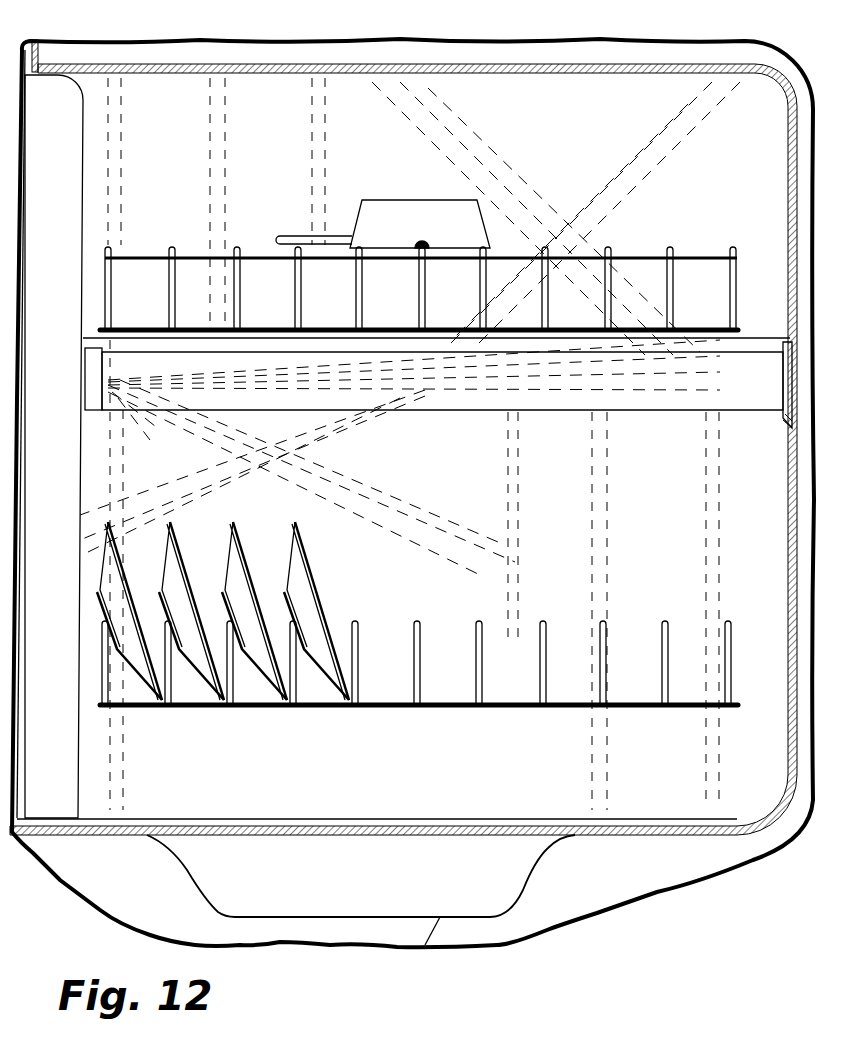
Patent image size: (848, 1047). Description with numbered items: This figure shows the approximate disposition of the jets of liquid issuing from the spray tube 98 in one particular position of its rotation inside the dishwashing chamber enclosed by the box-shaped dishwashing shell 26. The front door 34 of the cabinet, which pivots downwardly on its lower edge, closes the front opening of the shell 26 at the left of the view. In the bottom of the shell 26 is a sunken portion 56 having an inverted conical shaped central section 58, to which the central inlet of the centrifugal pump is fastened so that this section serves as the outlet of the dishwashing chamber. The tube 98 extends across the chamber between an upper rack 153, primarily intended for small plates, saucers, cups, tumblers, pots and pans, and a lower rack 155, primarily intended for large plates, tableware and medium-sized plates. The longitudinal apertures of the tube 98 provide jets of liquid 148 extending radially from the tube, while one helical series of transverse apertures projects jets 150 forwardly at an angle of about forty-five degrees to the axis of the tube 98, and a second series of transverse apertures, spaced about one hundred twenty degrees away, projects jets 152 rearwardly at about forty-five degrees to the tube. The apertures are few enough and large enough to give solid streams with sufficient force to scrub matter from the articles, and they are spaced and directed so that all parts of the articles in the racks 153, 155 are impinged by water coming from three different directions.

The dishwashing shell 26 is at (522, 64).
The front door 34 is at (68, 790).
The sunken portion 56 is at (537, 880).
The inverted conical shaped central section 58 is at (435, 930).
The tube 98 is at (635, 402).
The jets of liquid 148 is at (208, 193).
The jets 150 is at (475, 148).
The jets of liquid 152 is at (671, 128).
The upper rack 153 is at (632, 258).
The lower rack 155 is at (440, 705).